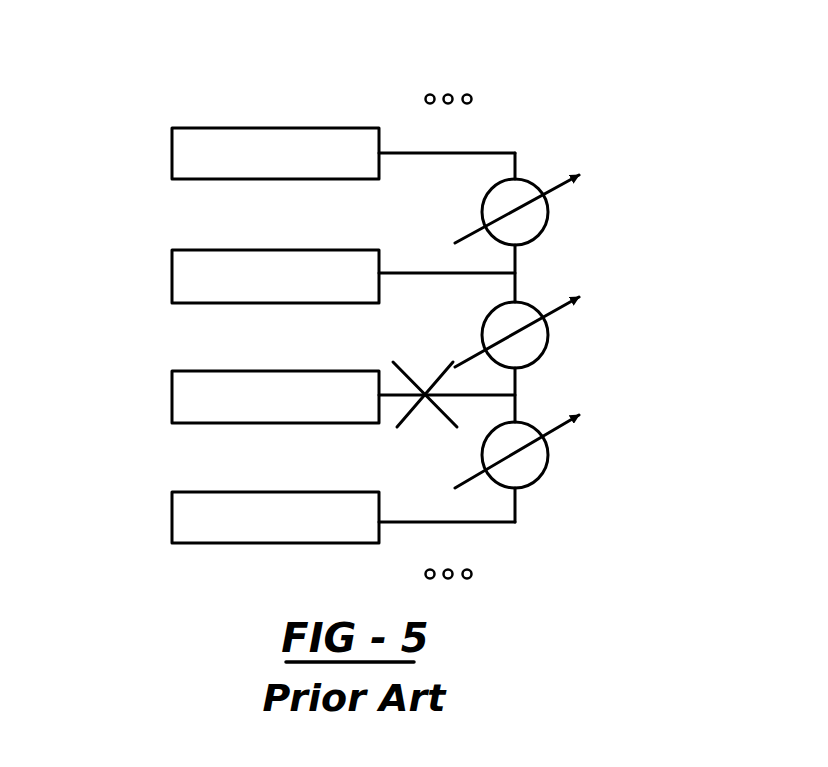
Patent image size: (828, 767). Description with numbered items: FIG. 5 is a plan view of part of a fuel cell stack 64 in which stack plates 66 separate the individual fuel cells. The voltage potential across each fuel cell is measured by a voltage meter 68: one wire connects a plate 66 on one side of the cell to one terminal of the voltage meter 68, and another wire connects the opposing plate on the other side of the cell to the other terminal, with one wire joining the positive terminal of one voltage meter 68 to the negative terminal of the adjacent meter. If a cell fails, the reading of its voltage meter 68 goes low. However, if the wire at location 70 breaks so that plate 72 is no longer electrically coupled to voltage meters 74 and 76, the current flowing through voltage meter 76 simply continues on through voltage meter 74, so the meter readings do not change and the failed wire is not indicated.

The fuel cell stack 64 is at (556, 96).
The stack plates 66 is at (277, 128).
The voltage meter 68 is at (548, 223).
The location 70 is at (447, 412).
The plate 72 is at (172, 398).
The voltage meter 74 is at (548, 355).
The voltage meter 76 is at (545, 480).